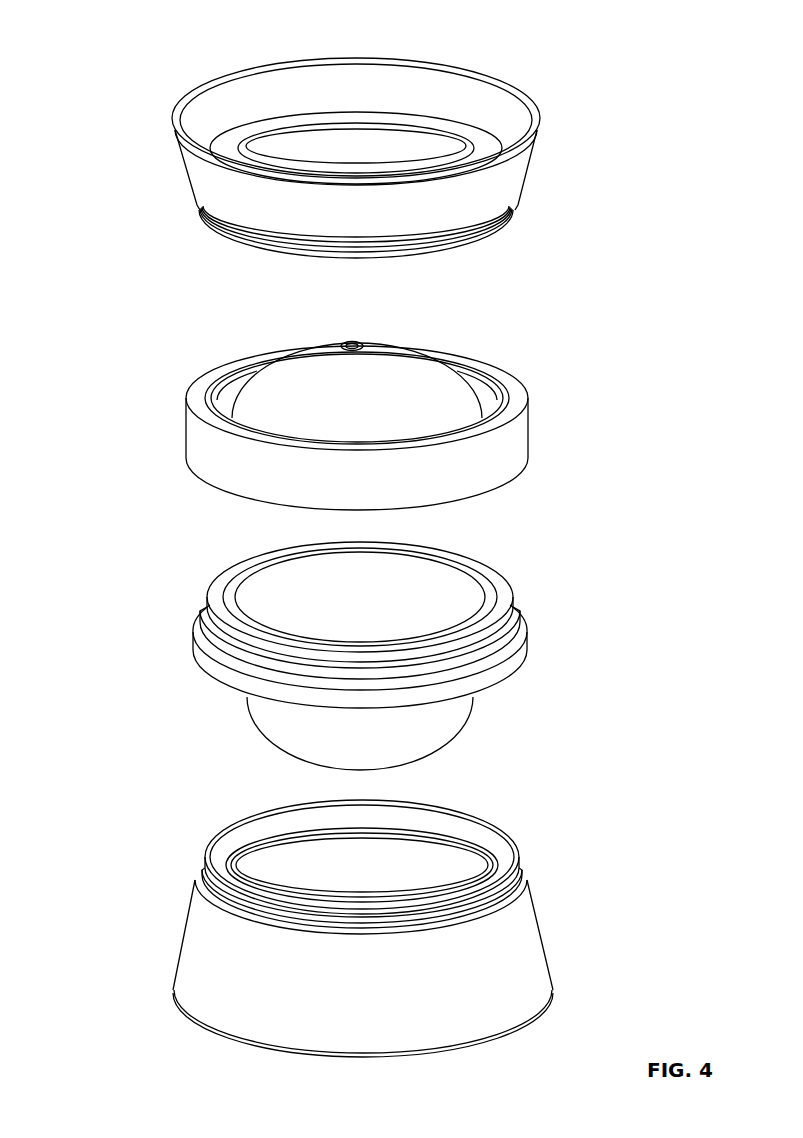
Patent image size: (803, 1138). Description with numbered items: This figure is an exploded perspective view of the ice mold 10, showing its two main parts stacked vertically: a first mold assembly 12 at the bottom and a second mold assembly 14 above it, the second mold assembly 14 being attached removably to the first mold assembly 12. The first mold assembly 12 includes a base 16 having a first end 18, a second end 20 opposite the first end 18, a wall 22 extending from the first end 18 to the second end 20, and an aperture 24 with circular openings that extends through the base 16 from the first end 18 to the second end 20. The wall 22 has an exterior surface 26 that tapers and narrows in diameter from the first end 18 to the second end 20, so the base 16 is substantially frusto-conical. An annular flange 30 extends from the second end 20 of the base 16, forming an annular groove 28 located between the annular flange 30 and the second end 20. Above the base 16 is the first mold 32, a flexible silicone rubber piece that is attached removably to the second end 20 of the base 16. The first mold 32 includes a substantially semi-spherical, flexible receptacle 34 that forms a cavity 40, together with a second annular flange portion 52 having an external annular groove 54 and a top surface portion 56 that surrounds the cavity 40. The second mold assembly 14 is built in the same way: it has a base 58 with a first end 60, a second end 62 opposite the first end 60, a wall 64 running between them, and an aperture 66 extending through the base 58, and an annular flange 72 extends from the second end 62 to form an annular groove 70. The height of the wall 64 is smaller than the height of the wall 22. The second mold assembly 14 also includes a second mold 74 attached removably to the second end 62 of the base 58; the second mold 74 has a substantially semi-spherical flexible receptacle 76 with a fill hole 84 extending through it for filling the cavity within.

The ice mold 10 is at (57, 57).
The first mold assembly 12 is at (595, 544).
The second mold assembly 14 is at (591, 57).
The base 16 is at (538, 982).
The first end 18 is at (497, 1040).
The second end 20 is at (203, 877).
The wall 22 is at (208, 1015).
The aperture 24 is at (328, 872).
The exterior surface 26 is at (210, 970).
The annular groove 28 is at (507, 893).
The annular flange 30 is at (522, 870).
The first mold 32 is at (534, 654).
The receptacle 34 is at (290, 735).
The cavity 40 is at (428, 598).
The second annular flange portion 52 is at (228, 645).
The external annular groove 54 is at (218, 627).
The top surface portion 56 is at (232, 582).
The base 58 is at (508, 160).
The first end 60 is at (481, 76).
The second end 62 is at (492, 218).
The wall 64 is at (508, 188).
The aperture 66 is at (375, 148).
The annular groove 70 is at (243, 232).
The annular flange 72 is at (262, 248).
The second mold 74 is at (510, 437).
The receptacle 76 is at (428, 378).
The fill hole 84 is at (348, 340).